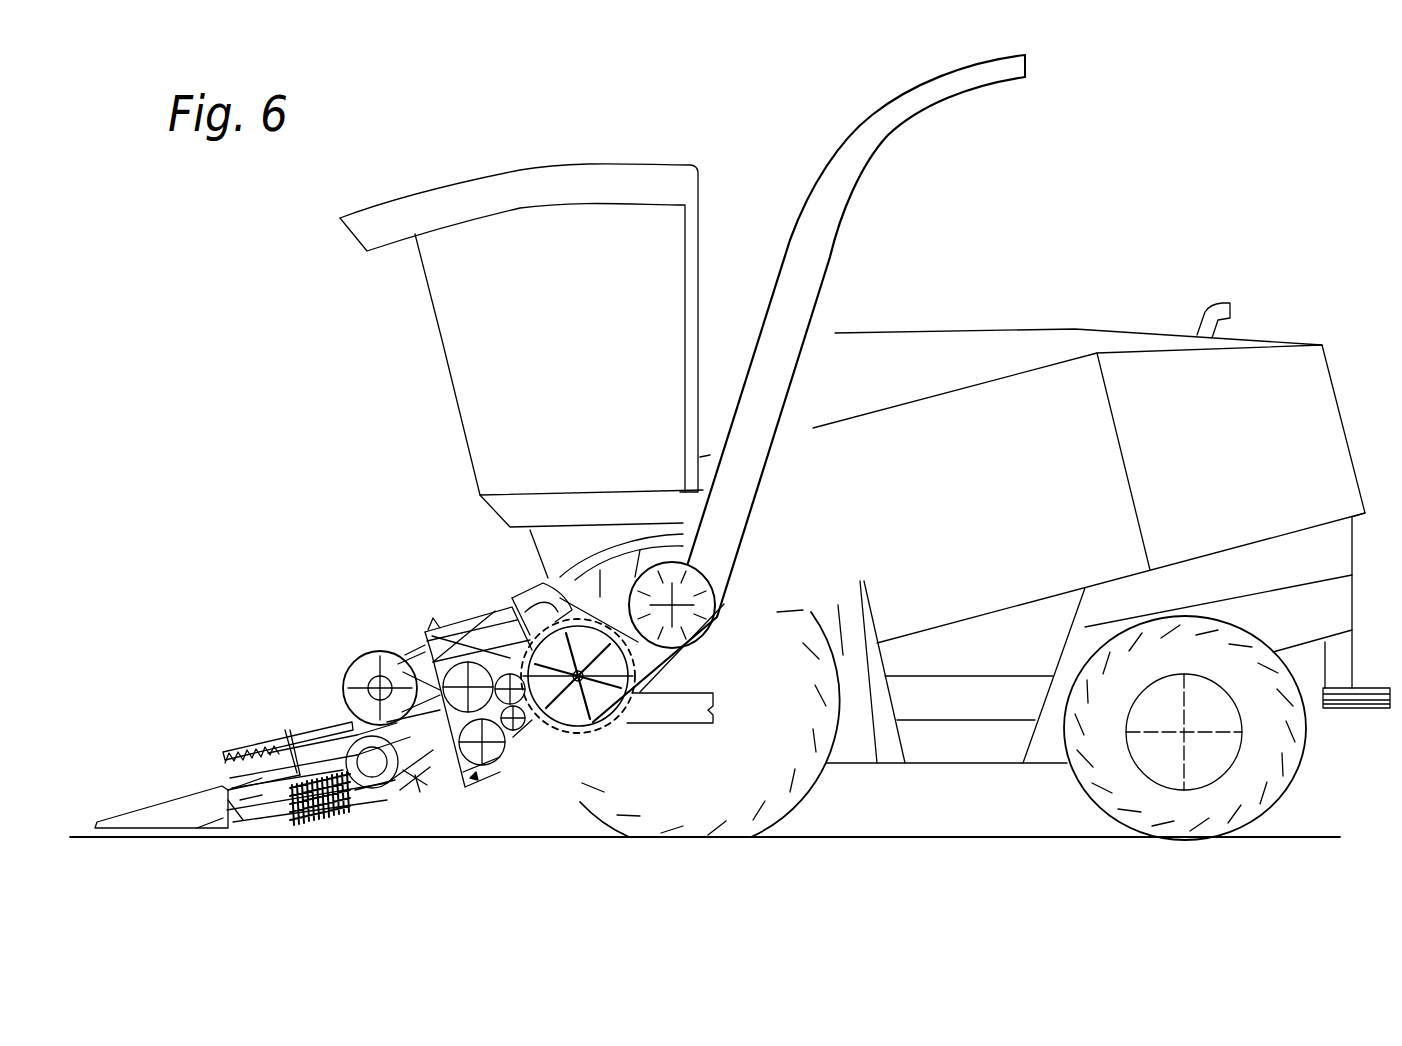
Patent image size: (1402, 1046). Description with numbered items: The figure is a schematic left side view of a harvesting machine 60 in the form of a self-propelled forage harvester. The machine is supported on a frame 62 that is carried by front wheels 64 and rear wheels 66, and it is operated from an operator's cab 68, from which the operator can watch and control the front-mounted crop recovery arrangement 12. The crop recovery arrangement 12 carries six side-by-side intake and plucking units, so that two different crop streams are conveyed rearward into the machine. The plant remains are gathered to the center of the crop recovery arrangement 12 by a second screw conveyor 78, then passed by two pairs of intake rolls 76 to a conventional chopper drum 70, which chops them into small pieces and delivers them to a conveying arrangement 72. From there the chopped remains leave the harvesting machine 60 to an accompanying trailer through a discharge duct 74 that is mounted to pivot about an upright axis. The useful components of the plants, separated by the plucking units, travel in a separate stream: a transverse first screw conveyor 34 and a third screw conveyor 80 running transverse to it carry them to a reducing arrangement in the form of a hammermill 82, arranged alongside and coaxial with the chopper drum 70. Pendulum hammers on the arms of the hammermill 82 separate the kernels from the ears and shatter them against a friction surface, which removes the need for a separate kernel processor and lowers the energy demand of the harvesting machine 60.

The crop recovery arrangement 12 is at (178, 792).
The first screw conveyor 34 is at (362, 677).
The harvesting machine 60 is at (1048, 324).
The frame 62 is at (887, 755).
The front wheels 64 is at (708, 798).
The rear wheels 66 is at (1247, 807).
The operator's cab 68 is at (485, 428).
The chopper drum 70 is at (585, 735).
The conveying arrangement 72 is at (700, 613).
The discharge duct 74 is at (815, 215).
The intake rolls 76 is at (488, 750).
The second screw conveyor 78 is at (390, 797).
The third screw conveyor 80 is at (484, 632).
The hammermill 82 is at (532, 592).